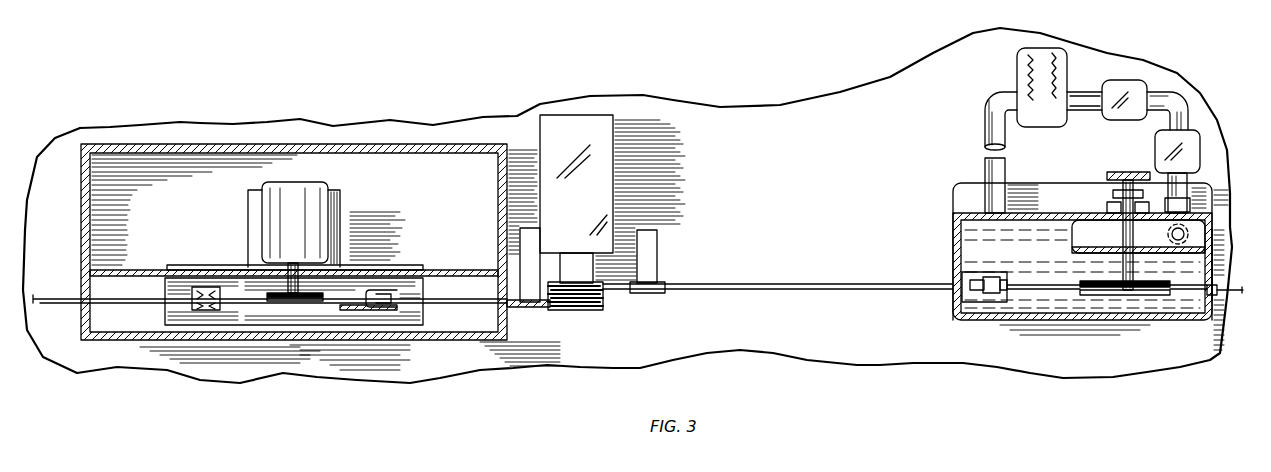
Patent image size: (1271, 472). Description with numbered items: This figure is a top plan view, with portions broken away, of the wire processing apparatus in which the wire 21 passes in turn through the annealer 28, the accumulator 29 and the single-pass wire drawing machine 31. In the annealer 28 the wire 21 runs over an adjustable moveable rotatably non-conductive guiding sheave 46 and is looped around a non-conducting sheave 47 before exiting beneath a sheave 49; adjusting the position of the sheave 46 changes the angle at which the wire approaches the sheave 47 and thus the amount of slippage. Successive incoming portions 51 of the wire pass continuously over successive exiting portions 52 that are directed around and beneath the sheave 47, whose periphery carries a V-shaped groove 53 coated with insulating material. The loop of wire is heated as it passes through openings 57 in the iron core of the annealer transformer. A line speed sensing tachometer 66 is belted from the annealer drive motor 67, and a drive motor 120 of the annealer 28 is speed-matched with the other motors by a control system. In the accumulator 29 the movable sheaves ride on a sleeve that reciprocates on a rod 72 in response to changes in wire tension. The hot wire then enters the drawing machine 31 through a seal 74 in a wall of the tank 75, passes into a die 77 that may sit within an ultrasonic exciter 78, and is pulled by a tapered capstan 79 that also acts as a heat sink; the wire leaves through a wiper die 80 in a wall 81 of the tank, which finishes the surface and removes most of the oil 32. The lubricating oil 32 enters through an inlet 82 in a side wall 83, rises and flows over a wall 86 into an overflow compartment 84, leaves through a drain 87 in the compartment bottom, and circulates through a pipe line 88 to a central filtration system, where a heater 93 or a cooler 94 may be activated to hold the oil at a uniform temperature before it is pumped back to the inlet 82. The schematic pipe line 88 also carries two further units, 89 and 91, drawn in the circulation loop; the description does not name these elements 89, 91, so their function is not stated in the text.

The wire 21 is at (117, 306).
The annealer 28 is at (233, 118).
The accumulator 29 is at (680, 162).
The single-pass wire drawing machine 31 is at (1062, 223).
The lubricating oil 32 is at (1040, 300).
The adjustable moveable rotatably non-conductive guiding sheave 46 is at (312, 308).
The non-conducting sheave 47 is at (237, 305).
The sheave 49 is at (363, 307).
The incoming portions of the wire 51 is at (340, 300).
The exiting portions of the wire 52 is at (453, 302).
The V-shaped groove 53 is at (210, 292).
The openings in iron core 57 is at (227, 292).
The line speed sensing tachometer 66 is at (540, 308).
The annealer drive motor 67 is at (597, 307).
The rod 72 is at (658, 293).
The seal 74 is at (950, 292).
The tank 75 is at (1070, 323).
The die 77 is at (980, 290).
The ultrasonic exciter 78 is at (990, 290).
The capstan 79 is at (1137, 293).
The wiper die 80 is at (1213, 300).
The wall of the tank 81 is at (1208, 262).
The inlet 82 is at (960, 208).
The side wall 83 is at (1040, 215).
The overflow compartment 84 is at (1210, 215).
The wall of overflow compartment 86 is at (1073, 233).
The drain 87 is at (1193, 232).
The pipe line 88 is at (1168, 92).
The sight glass 89 is at (1160, 143).
The sight glass 91 is at (1132, 82).
The heater 93 is at (1017, 70).
The cooler 94 is at (1065, 72).
The drive motor 120 is at (317, 208).